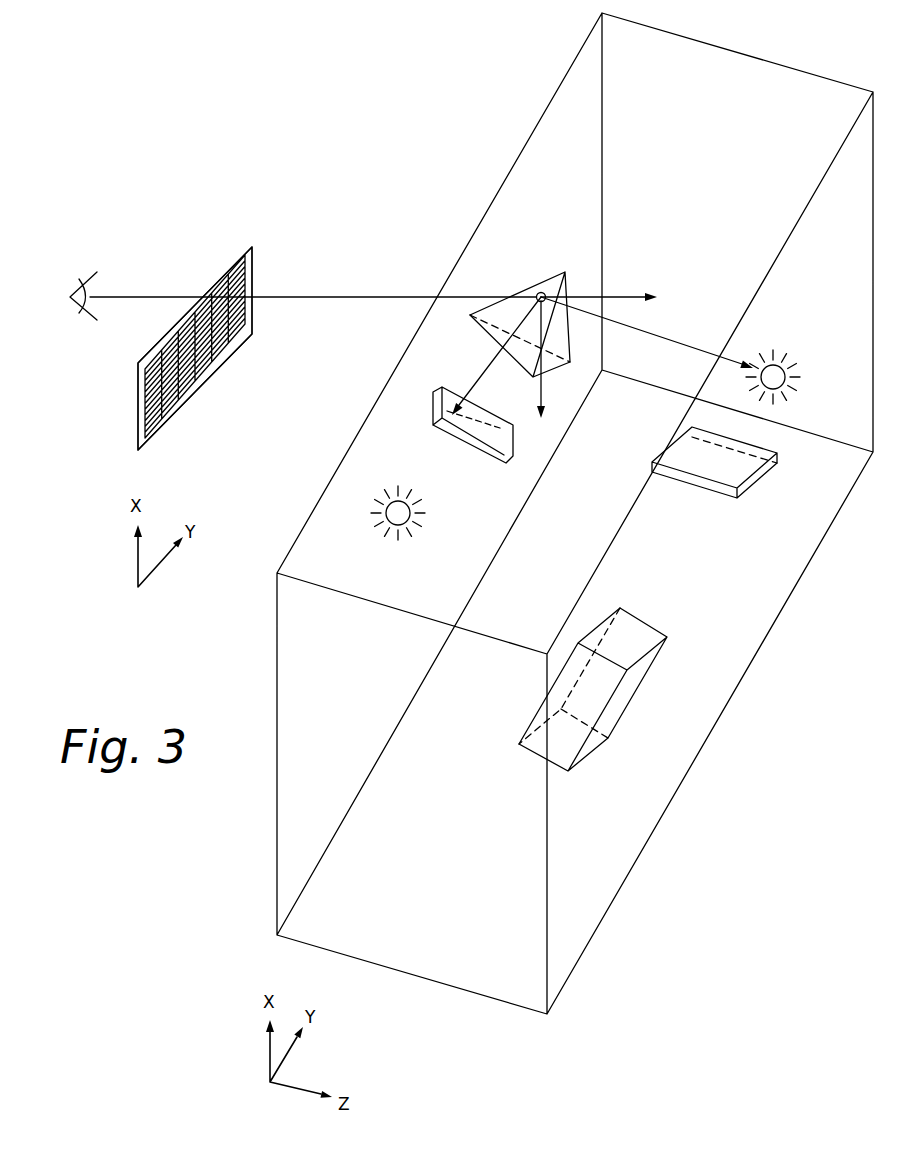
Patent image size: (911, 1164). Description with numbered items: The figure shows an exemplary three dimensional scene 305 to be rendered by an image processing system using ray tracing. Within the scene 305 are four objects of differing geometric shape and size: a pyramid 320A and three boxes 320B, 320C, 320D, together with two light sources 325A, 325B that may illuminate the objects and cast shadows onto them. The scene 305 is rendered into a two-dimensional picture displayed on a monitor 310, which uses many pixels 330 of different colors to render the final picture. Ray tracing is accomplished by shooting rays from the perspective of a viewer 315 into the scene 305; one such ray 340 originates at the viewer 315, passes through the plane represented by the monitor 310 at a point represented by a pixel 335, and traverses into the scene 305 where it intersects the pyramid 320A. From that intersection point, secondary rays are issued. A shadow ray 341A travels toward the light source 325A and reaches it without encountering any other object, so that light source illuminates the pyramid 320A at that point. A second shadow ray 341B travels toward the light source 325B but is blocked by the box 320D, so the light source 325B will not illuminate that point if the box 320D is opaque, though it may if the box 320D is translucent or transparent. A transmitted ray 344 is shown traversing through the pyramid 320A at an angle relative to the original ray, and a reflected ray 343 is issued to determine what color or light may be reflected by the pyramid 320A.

The three dimensional scene 305 is at (518, 1031).
The monitor 310 is at (254, 264).
The viewer 315 is at (97, 272).
The pyramid 320A is at (552, 280).
The box 320B is at (712, 491).
The box 320C is at (530, 753).
The box 320D is at (483, 455).
The light source 325A is at (770, 350).
The light source 325B is at (396, 531).
The pixels 330 is at (136, 398).
The pixel 335 is at (246, 309).
The ray 340 is at (375, 295).
The shadow ray 341A is at (697, 352).
The shadow ray 341B is at (492, 362).
The reflected ray 343 is at (546, 390).
The transmitted ray 344 is at (620, 294).